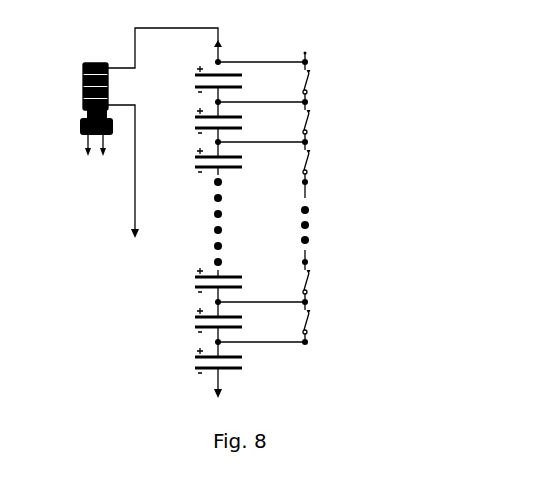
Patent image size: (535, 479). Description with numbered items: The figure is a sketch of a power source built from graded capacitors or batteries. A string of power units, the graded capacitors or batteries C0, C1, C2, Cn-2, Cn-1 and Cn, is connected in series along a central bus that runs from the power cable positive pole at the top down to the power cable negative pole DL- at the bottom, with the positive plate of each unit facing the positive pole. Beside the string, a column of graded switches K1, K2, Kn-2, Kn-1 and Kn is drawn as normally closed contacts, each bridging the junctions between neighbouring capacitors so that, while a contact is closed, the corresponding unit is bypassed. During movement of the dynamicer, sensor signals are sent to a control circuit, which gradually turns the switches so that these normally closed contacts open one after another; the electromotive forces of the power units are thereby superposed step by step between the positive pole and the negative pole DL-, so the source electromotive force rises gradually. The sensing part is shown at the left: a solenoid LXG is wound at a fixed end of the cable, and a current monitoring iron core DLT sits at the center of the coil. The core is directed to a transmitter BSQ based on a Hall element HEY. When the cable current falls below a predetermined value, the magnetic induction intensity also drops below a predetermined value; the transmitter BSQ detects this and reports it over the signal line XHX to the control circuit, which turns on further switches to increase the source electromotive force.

The solenoid LXG is at (83, 67).
The current monitoring iron core DLT is at (83, 88).
The Hall element HEY is at (87, 120).
The transmitter BSQ is at (82, 128).
The signal line XHX is at (88, 147).
The power cable negative pole DL- is at (233, 383).
The graded capacitor or battery Cn is at (202, 79).
The graded capacitor or battery Cn-1 is at (202, 121).
The graded capacitor or battery Cn-2 is at (202, 161).
The graded capacitor or battery C2 is at (205, 281).
The graded capacitor or battery C1 is at (205, 320).
The graded capacitor or battery C0 is at (205, 360).
The graded switch Kn is at (318, 82).
The graded switch Kn-1 is at (324, 122).
The graded switch Kn-2 is at (324, 162).
The graded switch K2 is at (321, 282).
The graded switch K1 is at (321, 322).